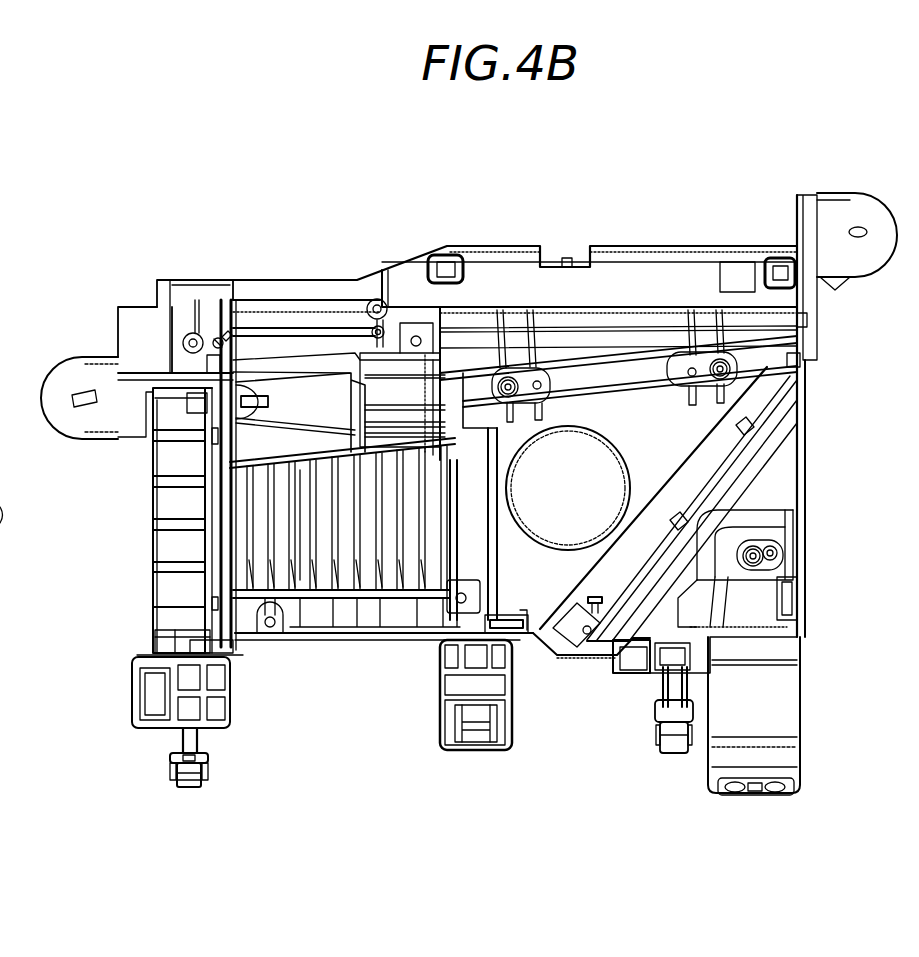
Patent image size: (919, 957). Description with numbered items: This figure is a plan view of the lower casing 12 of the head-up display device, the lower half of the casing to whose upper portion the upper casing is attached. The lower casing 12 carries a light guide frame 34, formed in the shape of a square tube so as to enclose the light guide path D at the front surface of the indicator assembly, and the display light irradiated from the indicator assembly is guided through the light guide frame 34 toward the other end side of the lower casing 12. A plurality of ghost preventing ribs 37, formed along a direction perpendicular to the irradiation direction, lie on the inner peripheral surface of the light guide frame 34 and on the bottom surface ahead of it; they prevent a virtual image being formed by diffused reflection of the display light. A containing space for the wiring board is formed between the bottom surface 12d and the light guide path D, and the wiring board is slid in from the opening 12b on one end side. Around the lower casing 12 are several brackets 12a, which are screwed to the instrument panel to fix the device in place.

The lower casing 12 is at (536, 243).
The bracket 12a is at (72, 360).
The opening 12b is at (160, 637).
The bottom surface 12d is at (247, 437).
The light guide frame 34 is at (272, 450).
The ghost preventing ribs 37 is at (330, 560).
The light guide path D is at (320, 527).